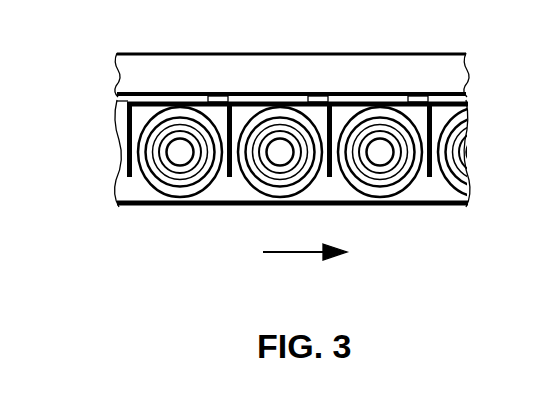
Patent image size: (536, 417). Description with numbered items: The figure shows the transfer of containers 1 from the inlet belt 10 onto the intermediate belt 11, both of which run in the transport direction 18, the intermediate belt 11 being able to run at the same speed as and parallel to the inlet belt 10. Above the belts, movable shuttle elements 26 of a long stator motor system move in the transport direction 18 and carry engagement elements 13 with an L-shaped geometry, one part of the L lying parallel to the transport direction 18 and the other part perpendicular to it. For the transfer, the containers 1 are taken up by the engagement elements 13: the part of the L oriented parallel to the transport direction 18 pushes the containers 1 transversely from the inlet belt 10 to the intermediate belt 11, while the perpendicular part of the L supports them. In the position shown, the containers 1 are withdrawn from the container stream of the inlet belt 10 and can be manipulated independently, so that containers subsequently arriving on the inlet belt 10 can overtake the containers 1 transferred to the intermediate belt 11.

The container 1 is at (405, 172).
The inlet belt 10 is at (124, 74).
The intermediate belt 11 is at (130, 192).
The engagement element 13 is at (337, 96).
The transport direction 18 is at (290, 253).
The shuttle element 26 is at (423, 96).